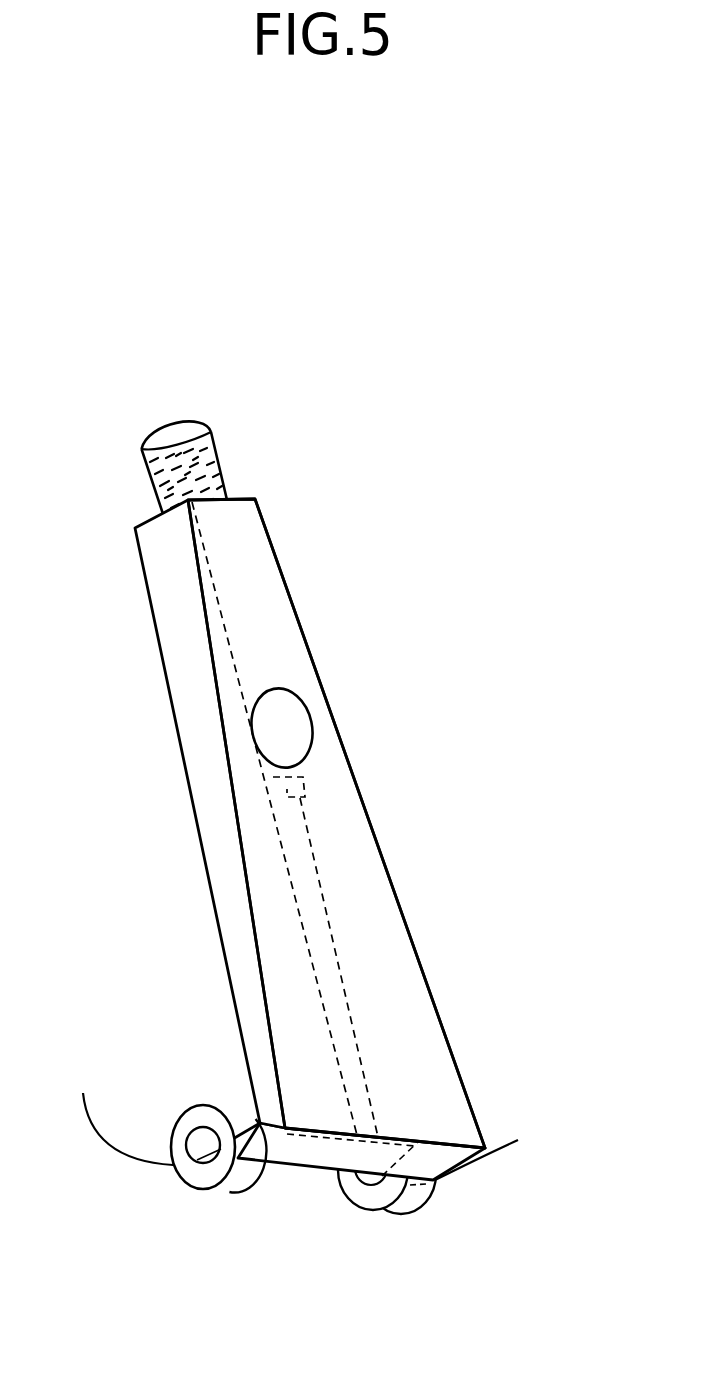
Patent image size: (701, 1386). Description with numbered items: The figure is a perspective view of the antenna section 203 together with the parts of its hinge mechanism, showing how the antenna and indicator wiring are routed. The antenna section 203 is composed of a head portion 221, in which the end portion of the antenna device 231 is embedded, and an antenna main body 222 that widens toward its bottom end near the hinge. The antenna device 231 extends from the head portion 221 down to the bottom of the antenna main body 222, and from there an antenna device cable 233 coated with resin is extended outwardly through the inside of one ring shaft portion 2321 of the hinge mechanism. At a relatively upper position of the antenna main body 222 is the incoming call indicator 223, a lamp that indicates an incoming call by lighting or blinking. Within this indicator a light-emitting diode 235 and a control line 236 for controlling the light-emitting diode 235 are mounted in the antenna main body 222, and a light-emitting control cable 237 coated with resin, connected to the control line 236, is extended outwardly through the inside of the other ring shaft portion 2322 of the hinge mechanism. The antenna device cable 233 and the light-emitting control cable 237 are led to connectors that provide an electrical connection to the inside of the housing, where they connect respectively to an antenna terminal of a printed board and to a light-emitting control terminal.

The antenna section 203 is at (428, 697).
The head portion 221 is at (224, 462).
The antenna main body 222 is at (281, 575).
The incoming call indicator 223 is at (263, 697).
The antenna device 231 is at (145, 457).
The ring shaft portion 2321 is at (231, 1186).
The other ring shaft portion 2322 is at (393, 1203).
The antenna device cable 233 is at (128, 1159).
The light-emitting diode 235 is at (304, 800).
The control line 236 is at (354, 1030).
The light-emitting control cable 237 is at (487, 1168).